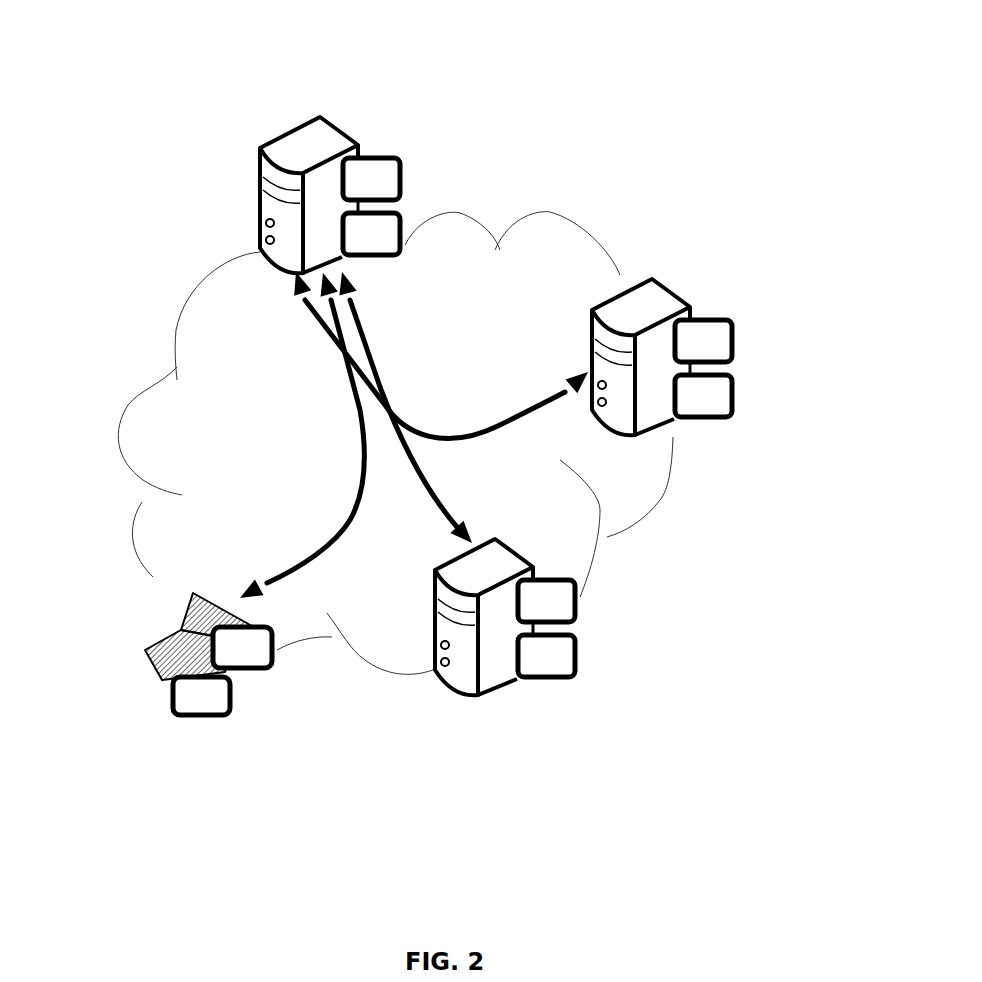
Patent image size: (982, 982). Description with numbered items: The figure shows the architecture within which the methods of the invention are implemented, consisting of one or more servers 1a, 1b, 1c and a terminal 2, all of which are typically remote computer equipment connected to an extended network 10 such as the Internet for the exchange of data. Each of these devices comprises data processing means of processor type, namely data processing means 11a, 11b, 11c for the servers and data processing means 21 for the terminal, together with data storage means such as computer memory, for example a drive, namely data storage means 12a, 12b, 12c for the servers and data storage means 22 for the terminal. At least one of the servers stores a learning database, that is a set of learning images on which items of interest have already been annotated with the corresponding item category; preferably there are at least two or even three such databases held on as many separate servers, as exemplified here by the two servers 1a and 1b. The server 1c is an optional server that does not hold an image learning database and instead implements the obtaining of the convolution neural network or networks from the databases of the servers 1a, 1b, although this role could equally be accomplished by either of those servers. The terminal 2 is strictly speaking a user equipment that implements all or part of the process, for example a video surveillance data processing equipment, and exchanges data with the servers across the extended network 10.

The extended network 10 is at (172, 267).
The server 1a is at (652, 268).
The server 1b is at (499, 705).
The server 1c is at (322, 106).
The data processing means 11a is at (741, 404).
The data processing means 11b is at (584, 664).
The data processing means 11c is at (411, 246).
The data storage means 12a is at (742, 328).
The data storage means 12b is at (587, 587).
The data storage means 12c is at (412, 166).
The terminal 2 is at (142, 649).
The data processing means 21 is at (284, 680).
The data storage means 22 is at (237, 720).